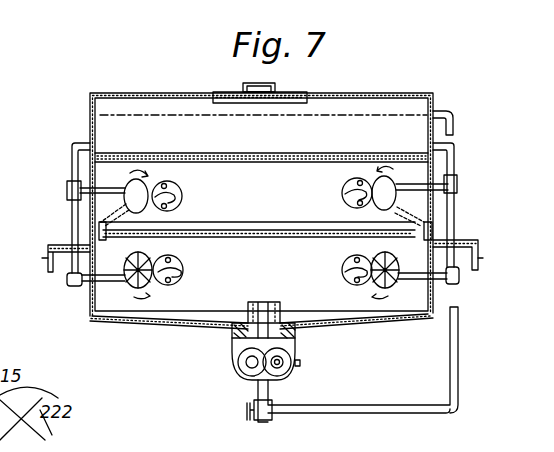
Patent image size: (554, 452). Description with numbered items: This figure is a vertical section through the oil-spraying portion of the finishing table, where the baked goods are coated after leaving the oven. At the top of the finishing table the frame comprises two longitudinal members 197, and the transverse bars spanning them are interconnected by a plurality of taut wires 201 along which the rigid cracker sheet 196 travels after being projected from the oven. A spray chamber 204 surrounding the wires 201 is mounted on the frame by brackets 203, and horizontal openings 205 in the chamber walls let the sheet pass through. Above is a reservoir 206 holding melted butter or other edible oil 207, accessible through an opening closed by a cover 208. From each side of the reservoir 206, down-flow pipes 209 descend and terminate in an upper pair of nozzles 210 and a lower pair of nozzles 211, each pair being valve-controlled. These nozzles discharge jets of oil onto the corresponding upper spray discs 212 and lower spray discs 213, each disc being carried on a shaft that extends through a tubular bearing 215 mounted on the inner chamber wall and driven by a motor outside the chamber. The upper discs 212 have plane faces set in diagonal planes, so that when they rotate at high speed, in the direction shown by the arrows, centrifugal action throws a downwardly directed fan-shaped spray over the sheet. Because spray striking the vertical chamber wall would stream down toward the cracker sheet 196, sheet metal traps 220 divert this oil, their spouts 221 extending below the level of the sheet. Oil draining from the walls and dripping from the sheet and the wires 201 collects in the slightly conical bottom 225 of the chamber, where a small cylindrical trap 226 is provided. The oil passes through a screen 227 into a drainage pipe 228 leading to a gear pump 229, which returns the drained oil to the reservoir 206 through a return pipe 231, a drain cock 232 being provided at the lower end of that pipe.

The rigid cracker sheet 196 is at (247, 236).
The longitudinal members 197 is at (48, 262).
The taut wires 201 is at (245, 238).
The brackets 203 is at (56, 243).
The spray chamber 204 is at (88, 316).
The horizontal openings 205 is at (205, 226).
The reservoir 206 is at (367, 94).
The edible oil 207 is at (405, 112).
The cover 208 is at (287, 92).
The down-flow pipes 209 is at (72, 170).
The upper nozzles 210 is at (125, 190).
The lower nozzles 211 is at (108, 284).
The upper spray discs 212 is at (152, 183).
The lower spray discs 213 is at (145, 257).
The tubular bearing 215 is at (181, 187).
The sheet metal traps 220 is at (112, 209).
The spouts 221 is at (100, 236).
The conical bottom 225 is at (192, 328).
The cylindrical trap 226 is at (294, 335).
The screen 227 is at (262, 297).
The drainage pipe 228 is at (233, 346).
The gear pump 229 is at (300, 365).
The return pipe 231 is at (455, 120).
The drain cock 232 is at (270, 418).